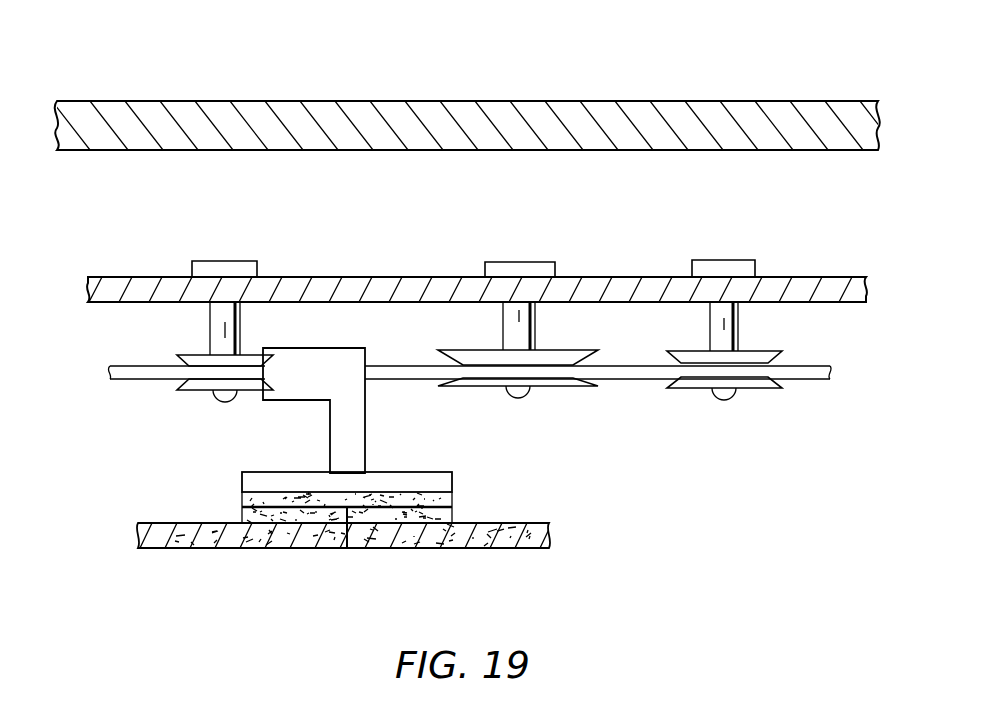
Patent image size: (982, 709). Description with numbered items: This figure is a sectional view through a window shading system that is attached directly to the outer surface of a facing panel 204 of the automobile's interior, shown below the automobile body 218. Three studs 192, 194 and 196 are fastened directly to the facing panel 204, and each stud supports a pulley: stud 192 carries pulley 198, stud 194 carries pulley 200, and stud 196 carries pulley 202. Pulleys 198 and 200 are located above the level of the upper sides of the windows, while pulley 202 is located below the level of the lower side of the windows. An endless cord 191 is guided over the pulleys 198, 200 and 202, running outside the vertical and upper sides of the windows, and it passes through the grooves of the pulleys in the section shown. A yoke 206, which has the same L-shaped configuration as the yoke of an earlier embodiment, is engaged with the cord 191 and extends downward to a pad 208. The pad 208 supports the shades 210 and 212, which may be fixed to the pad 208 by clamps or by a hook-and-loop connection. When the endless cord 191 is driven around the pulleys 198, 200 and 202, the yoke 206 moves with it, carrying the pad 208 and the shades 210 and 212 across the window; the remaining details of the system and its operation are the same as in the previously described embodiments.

The endless cord 191 is at (113, 378).
The stud 192 is at (215, 338).
The stud 194 is at (742, 322).
The stud 196 is at (532, 320).
The pulley 198 is at (253, 387).
The pulley 200 is at (755, 386).
The pulley 202 is at (561, 386).
The facing panel 204 is at (778, 280).
The yoke 206 is at (343, 430).
The pad 208 is at (375, 483).
The shade 210 is at (220, 542).
The shade 212 is at (500, 542).
The automobile body 218 is at (388, 108).